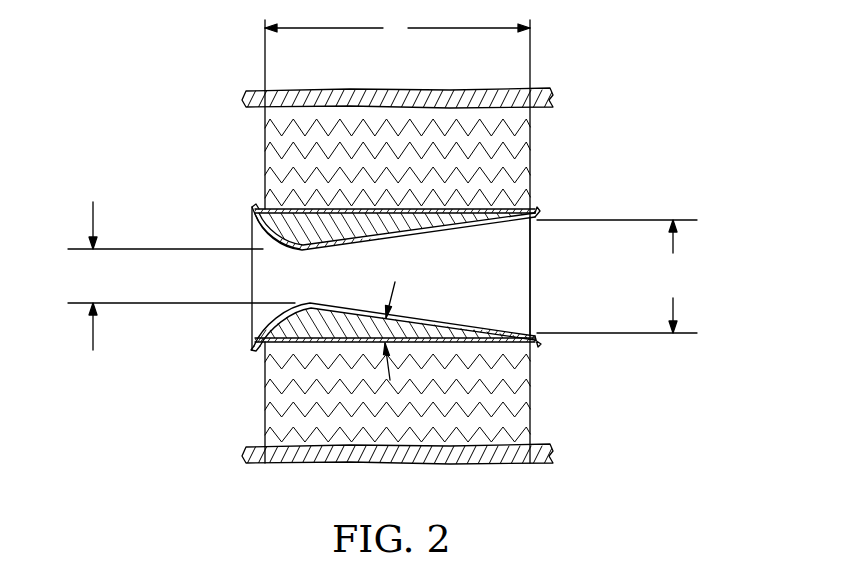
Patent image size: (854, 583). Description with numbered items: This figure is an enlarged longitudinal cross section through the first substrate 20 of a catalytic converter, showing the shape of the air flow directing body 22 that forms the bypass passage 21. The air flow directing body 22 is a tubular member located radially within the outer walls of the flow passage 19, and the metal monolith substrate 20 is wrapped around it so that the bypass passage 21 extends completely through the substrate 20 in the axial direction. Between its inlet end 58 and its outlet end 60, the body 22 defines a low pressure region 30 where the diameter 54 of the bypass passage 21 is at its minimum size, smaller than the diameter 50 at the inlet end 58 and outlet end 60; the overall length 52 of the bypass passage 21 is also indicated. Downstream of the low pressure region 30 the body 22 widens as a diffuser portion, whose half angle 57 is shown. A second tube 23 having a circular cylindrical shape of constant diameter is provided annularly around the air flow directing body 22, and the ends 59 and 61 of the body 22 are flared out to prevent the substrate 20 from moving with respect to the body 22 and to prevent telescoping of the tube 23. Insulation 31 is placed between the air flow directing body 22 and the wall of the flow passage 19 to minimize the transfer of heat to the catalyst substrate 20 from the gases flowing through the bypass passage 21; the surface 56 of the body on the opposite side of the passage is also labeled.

The flow passage 19 is at (331, 343).
The first substrate 20 is at (391, 128).
The bypass passage 21 is at (500, 310).
The air flow directing body 22 is at (358, 246).
The second tube 23 is at (430, 215).
The low pressure region 30 is at (320, 282).
The insulation 31 is at (303, 230).
The diameter at the inlet and outlet ends 50 is at (688, 278).
The overall length 52 is at (418, 27).
The diameter at the low pressure region 54 is at (82, 278).
The upper surface of lower member 56 is at (287, 308).
The half angle 57 is at (384, 337).
The inlet end 58 is at (262, 245).
The flared end 59 is at (254, 207).
The outlet end 60 is at (507, 265).
The flared end 61 is at (537, 215).